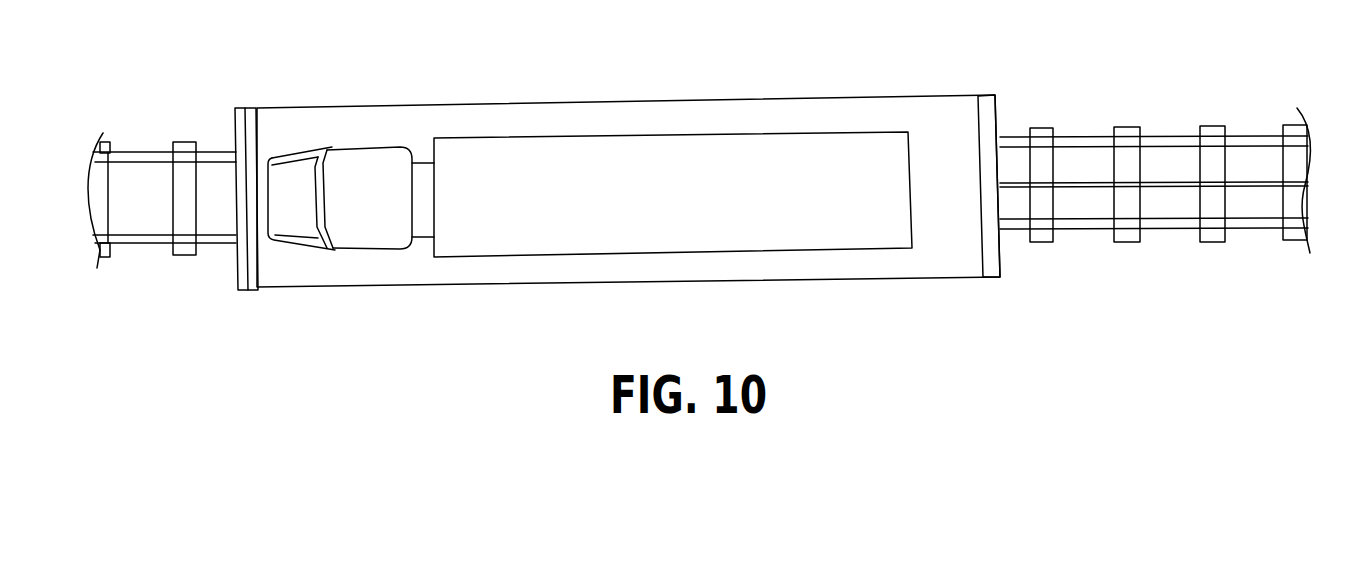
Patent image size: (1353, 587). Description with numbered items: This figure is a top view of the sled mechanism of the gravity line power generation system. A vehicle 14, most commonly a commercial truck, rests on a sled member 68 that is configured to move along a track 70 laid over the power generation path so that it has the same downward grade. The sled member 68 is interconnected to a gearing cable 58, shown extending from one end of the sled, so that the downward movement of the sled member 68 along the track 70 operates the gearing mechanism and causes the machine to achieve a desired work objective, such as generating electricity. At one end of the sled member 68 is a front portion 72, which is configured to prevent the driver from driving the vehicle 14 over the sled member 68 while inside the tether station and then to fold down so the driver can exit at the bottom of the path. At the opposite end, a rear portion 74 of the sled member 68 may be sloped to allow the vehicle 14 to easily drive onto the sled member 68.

The vehicle 14 is at (693, 148).
The gearing cable 58 is at (1160, 180).
The sled member 68 is at (946, 113).
The track 70 is at (1155, 188).
The front portion 72 is at (248, 148).
The rear portion 74 is at (988, 127).